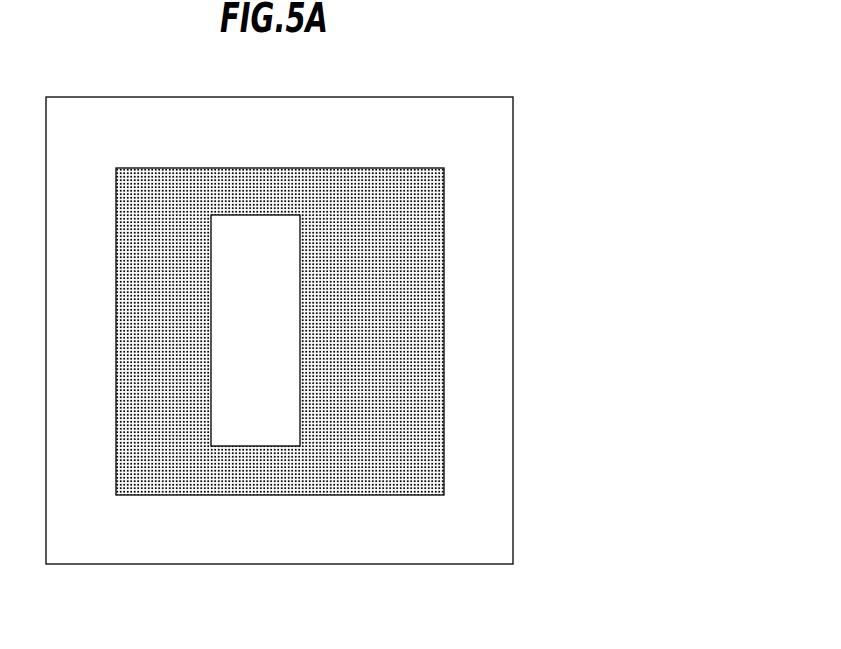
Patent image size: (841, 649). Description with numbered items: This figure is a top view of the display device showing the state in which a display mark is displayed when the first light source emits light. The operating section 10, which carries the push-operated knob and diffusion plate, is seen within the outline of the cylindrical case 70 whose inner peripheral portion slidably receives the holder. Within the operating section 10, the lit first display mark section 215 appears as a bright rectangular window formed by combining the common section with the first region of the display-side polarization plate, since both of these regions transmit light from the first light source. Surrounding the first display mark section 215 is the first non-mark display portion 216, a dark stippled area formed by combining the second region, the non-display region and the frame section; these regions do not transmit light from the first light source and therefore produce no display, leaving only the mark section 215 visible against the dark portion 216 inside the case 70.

The operating section 10 is at (427, 318).
The case 70 is at (513, 270).
The first non-mark display portion 216 is at (407, 360).
The first display mark section 215 is at (263, 447).